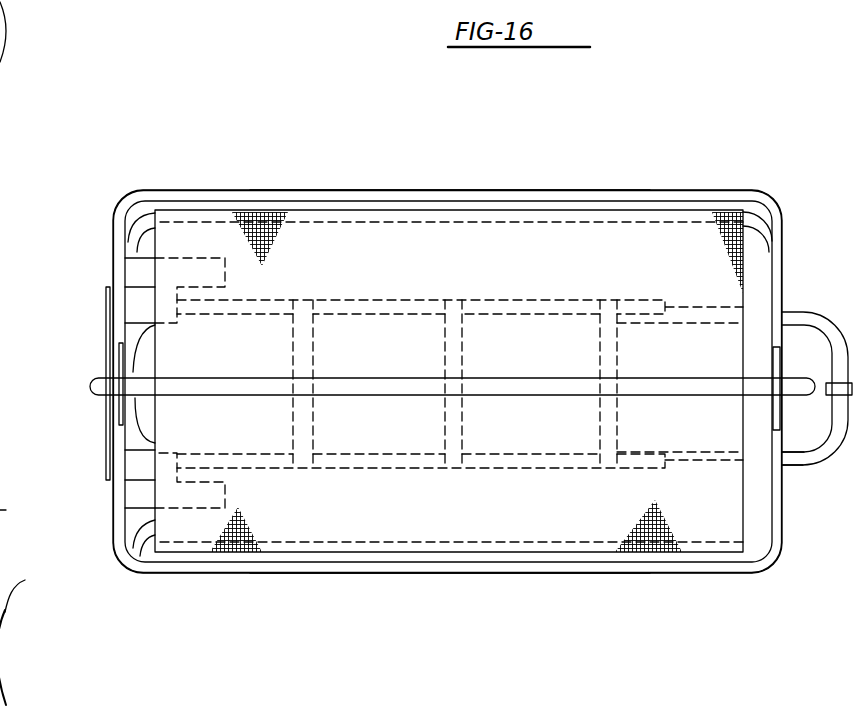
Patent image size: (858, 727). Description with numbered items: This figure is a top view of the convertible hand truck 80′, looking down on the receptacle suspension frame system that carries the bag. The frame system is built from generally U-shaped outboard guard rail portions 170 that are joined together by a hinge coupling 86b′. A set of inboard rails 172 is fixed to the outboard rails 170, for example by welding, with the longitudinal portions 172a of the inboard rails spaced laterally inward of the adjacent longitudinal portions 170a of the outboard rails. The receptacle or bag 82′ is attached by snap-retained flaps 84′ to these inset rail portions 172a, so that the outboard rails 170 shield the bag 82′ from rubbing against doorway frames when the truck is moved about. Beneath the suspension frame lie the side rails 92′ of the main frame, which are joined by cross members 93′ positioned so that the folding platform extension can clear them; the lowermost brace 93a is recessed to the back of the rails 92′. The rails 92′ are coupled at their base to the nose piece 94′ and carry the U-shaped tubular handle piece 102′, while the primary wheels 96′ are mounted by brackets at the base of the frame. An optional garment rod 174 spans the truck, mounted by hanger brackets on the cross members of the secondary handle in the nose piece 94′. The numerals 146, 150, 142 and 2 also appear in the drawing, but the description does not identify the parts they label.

The hand truck 80′ is at (746, 158).
The outboard guard rail portions 170 is at (213, 190).
The inboard rails 172 is at (147, 202).
The longitudinal portions of the outboard rails 170a is at (418, 191).
The longitudinal portions of the inboard rails 172a is at (550, 222).
The snap-retained flaps 84′ is at (612, 210).
The receptacle or bag 82′ is at (745, 280).
The side rails 92′ is at (485, 300).
The cross members 93′ is at (460, 420).
The lowermost brace 93a is at (313, 427).
The garment rod 174 is at (78, 397).
The pin 146 is at (0, 303).
The hinge coupling 86b′ is at (795, 362).
The U-shaped tubular handle piece 102′ is at (830, 444).
The primary wheels 96′ is at (140, 262).
The nose piece 94′ is at (133, 464).
The latch 150 is at (20, 518).
The hinge 142 is at (38, 589).
The partial numeral 2 is at (1, 354).